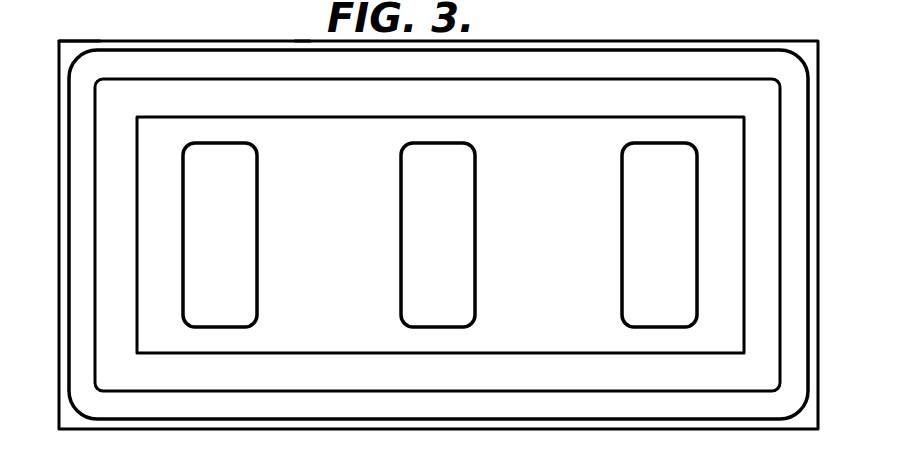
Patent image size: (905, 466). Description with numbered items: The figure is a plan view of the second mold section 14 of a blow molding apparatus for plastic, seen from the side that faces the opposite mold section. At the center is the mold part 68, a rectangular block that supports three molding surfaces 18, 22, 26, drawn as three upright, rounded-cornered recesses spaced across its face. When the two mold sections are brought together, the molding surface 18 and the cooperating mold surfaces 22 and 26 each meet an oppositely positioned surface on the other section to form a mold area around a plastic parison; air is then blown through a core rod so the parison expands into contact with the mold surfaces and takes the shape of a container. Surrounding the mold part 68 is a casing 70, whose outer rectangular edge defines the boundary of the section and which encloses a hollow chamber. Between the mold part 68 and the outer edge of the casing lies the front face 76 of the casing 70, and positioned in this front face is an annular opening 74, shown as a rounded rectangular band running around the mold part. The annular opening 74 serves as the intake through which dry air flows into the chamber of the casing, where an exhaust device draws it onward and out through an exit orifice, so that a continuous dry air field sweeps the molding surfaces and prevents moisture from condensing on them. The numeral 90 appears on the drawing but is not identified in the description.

The molding section 14 is at (302, 36).
The molding surface 18 is at (242, 216).
The mold surface 22 is at (410, 258).
The mold surface 26 is at (633, 240).
The mold part 68 is at (617, 117).
The casing 70 is at (818, 262).
The annular opening 74 is at (792, 98).
The front face 76 is at (758, 202).
The sheet 90 is at (80, 20).